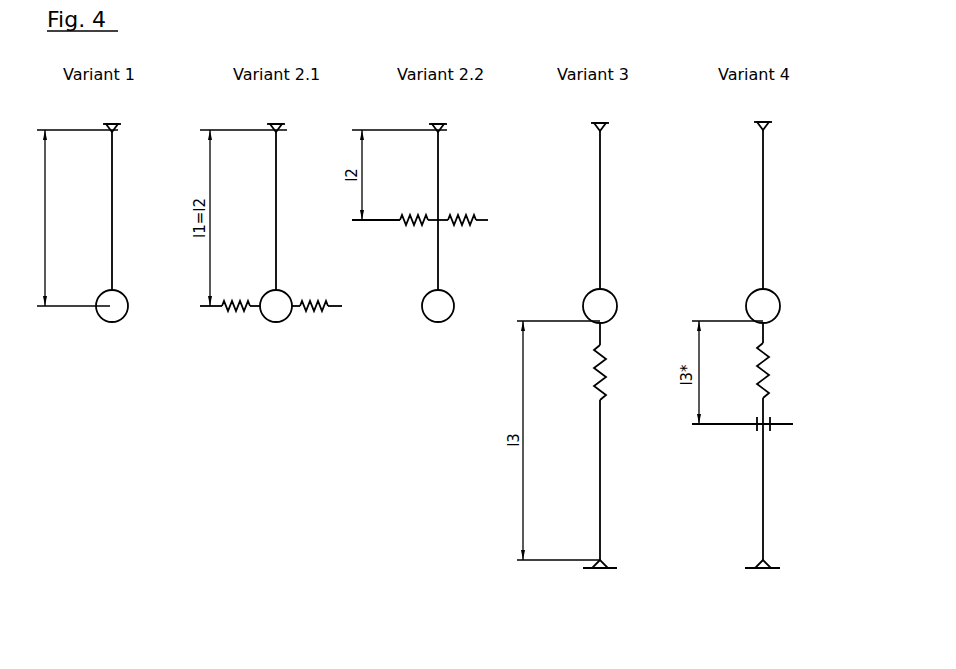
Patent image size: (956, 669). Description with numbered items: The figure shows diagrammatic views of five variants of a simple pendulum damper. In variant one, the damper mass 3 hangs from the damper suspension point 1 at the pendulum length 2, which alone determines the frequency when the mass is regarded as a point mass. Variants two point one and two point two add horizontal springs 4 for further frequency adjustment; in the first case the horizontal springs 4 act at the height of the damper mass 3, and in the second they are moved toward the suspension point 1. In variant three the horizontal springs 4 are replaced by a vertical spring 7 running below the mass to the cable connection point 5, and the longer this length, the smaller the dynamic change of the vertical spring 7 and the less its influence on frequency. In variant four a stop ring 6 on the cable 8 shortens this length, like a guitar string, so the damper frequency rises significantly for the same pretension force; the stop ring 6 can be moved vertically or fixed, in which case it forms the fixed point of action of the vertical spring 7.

The damper suspension point 1 is at (128, 117).
The pendulum length 2 is at (50, 222).
The damper mass 3 is at (131, 300).
The horizontal spring 4 is at (350, 256).
The cable connection point 5 is at (595, 580).
The stop ring 6 is at (788, 428).
The vertical spring 7 is at (590, 371).
The cable 8 is at (768, 500).